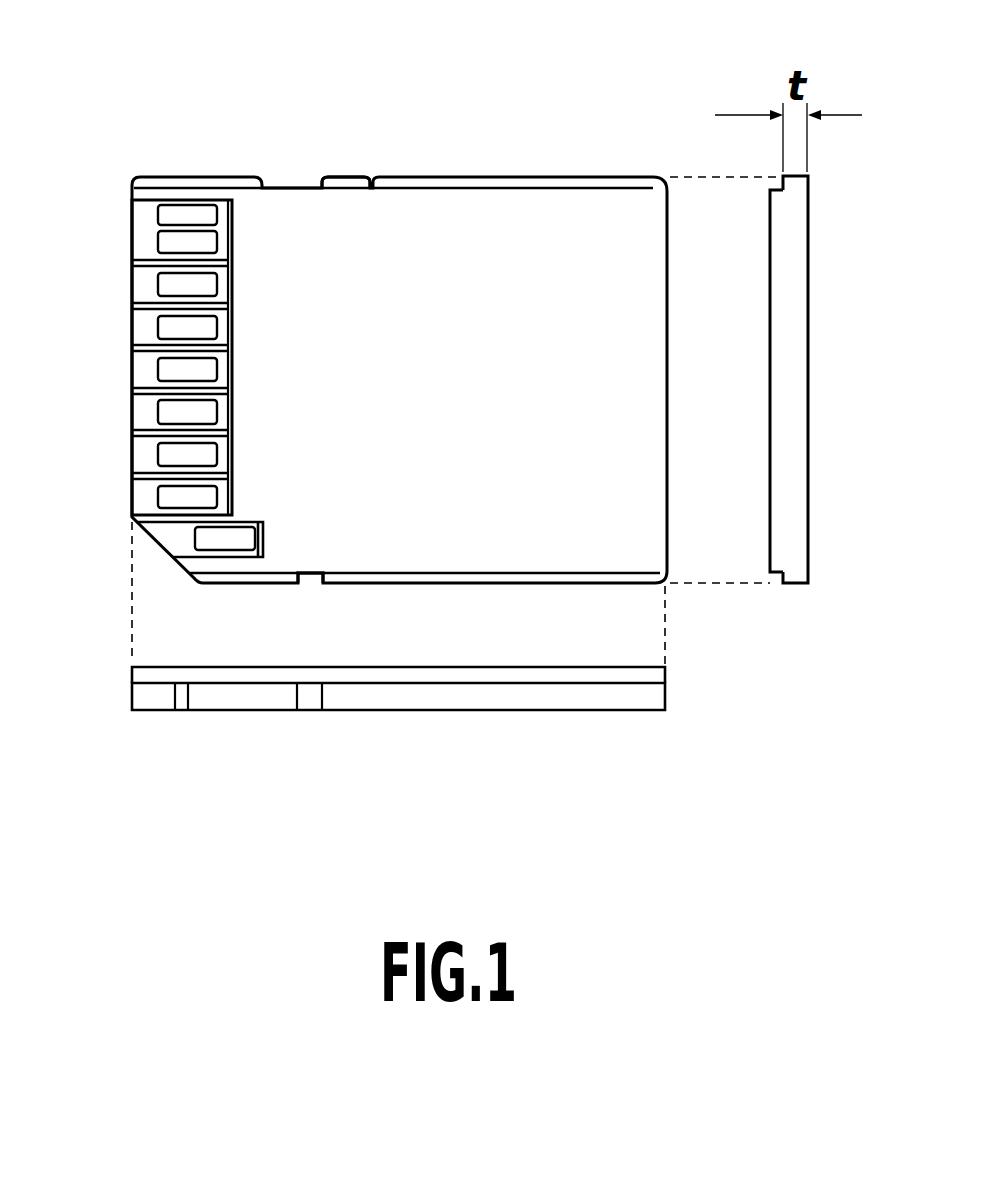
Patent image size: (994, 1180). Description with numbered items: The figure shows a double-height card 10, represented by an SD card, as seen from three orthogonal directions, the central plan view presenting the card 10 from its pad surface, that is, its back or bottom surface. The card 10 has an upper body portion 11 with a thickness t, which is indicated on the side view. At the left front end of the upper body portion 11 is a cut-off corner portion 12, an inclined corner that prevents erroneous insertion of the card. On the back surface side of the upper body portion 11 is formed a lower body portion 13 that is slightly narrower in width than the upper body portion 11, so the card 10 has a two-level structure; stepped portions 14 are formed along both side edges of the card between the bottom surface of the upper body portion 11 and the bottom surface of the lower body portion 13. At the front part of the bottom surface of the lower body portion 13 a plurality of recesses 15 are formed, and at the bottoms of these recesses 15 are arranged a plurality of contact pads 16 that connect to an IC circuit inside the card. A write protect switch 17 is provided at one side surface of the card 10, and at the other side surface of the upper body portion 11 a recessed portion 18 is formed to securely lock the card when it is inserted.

The double-height card 10 is at (577, 150).
The upper body portion 11 is at (797, 580).
The cut-off corner portion 12 is at (165, 553).
The lower body portion 13 is at (652, 680).
The stepped portions 14 is at (777, 575).
The recesses 15 is at (142, 237).
The contact pads 16 is at (170, 288).
The write protect switch 17 is at (345, 176).
The recessed portion 18 is at (309, 577).